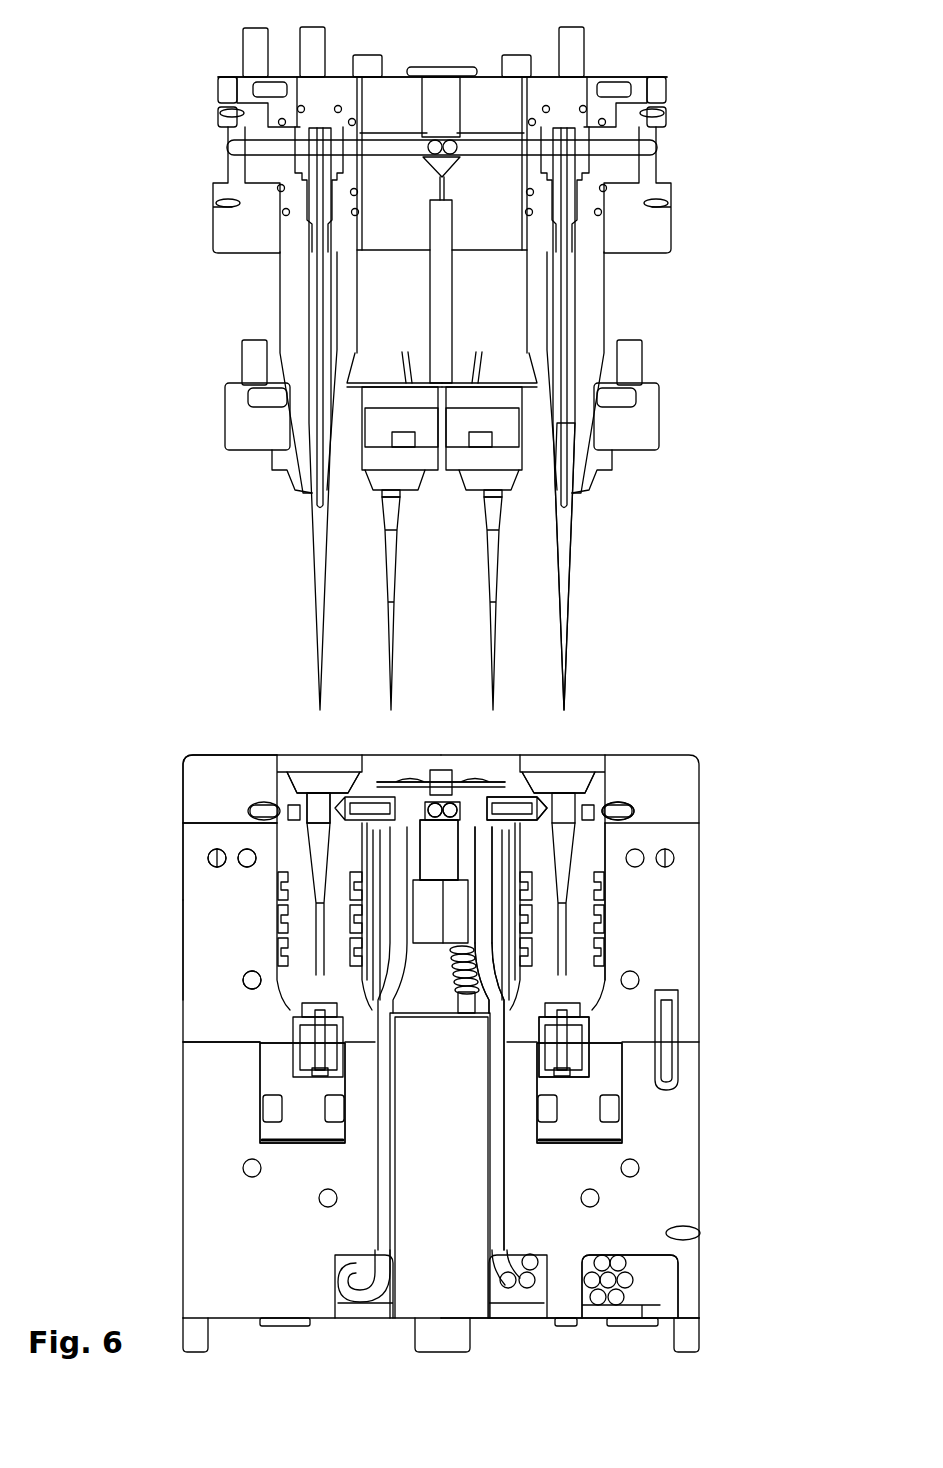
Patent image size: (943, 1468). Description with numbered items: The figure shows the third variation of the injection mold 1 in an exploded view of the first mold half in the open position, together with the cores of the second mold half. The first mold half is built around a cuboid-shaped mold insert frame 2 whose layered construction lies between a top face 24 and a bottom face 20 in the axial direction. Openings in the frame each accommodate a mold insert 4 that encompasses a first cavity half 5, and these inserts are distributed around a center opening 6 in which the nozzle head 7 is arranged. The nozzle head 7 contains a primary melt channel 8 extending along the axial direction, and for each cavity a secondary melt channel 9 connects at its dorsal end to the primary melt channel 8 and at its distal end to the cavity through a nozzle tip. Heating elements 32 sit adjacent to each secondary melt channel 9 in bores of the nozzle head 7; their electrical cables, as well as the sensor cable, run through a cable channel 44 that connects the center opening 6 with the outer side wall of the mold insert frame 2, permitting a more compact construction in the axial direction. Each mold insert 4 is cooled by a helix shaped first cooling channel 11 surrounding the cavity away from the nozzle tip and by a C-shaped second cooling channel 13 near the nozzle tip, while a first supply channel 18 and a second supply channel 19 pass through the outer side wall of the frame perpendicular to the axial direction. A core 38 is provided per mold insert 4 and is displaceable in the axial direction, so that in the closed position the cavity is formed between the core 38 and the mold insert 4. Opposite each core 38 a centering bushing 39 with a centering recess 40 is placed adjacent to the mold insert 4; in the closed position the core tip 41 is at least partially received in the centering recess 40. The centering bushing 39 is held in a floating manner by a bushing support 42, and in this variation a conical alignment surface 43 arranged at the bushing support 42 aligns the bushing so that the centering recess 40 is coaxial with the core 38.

The injection mold 1 is at (112, 47).
The mold insert frame 2 is at (208, 877).
The mold insert 4 is at (285, 790).
The cavity half 5 is at (323, 802).
The center opening 6 is at (505, 952).
The nozzle head 7 is at (407, 792).
The primary melt channel 8 is at (473, 813).
The secondary melt channel 9 is at (442, 820).
The first cooling channel 11 is at (595, 888).
The second cooling channel 13 is at (620, 802).
The first supply channel 18 is at (245, 975).
The second supply channel 19 is at (209, 852).
The bottom face 20 is at (740, 1340).
The top face 24 is at (180, 693).
The heating element 32 is at (487, 865).
The core 38 is at (565, 577).
The centering bushing 39 is at (303, 1052).
The centering recess 40 is at (588, 1018).
The core tip 41 is at (500, 797).
The bushing support 42 is at (252, 1053).
The alignment surface 43 is at (580, 1045).
The cable channel 44 is at (657, 1280).